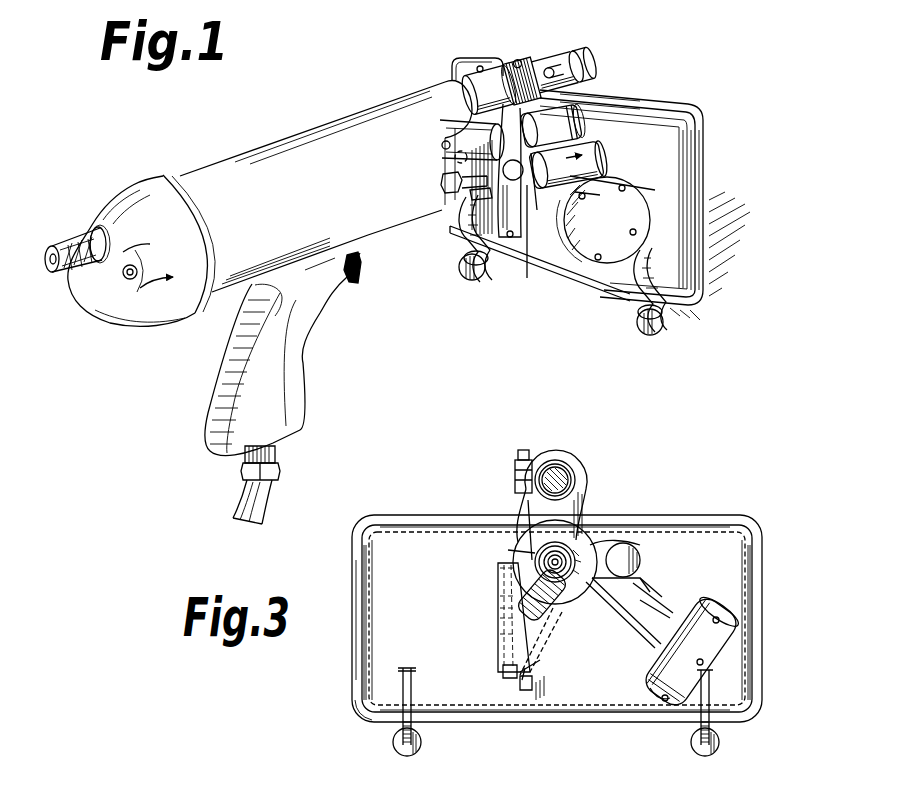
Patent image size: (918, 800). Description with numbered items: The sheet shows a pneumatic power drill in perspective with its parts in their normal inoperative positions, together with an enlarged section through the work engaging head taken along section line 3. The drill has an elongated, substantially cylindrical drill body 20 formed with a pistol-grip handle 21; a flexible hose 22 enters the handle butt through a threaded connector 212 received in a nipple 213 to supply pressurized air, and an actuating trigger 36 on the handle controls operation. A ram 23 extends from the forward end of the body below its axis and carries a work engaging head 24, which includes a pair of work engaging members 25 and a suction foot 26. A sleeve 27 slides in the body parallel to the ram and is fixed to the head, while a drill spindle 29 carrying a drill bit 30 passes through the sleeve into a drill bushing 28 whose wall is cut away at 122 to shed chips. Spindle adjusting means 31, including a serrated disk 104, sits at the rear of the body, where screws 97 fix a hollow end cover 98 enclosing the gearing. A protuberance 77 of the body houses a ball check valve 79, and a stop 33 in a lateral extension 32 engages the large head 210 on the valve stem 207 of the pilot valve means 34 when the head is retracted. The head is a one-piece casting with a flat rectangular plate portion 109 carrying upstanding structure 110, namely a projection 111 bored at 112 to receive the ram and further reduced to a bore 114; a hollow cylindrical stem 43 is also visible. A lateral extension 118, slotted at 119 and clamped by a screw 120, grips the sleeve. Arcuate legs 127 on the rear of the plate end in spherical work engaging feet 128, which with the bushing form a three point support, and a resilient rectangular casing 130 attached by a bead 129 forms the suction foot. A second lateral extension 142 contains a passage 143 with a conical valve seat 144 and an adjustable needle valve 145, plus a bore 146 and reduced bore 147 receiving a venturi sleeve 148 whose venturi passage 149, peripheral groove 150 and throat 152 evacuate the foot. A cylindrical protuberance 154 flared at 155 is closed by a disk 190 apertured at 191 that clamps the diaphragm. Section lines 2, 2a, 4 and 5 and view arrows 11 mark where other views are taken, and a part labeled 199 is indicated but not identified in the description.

In FIG. 1, the drill body 20 is at (262, 150).
In FIG. 1, the pistol-grip handle 21 is at (307, 397).
In FIG. 1, the flexible hose 22 is at (266, 506).
In FIG. 1, the ram 23 is at (476, 124).
In FIG. 3, the ram 23 is at (586, 580).
In FIG. 1, the work engaging head 24 is at (674, 108).
In FIG. 1, the work engaging members 25 is at (476, 283).
In FIG. 3, the work engaging members 25 is at (412, 758).
In FIG. 1, the suction foot 26 is at (708, 190).
In FIG. 3, the suction foot 26 is at (350, 648).
In FIG. 1, the sleeve 27 is at (481, 90).
In FIG. 3, the sleeve 27 is at (586, 478).
In FIG. 1, the drill bushing 28 is at (560, 58).
In FIG. 1, the drill spindle 29 is at (524, 62).
In FIG. 3, the drill spindle 29 is at (571, 470).
In FIG. 1, the drill bit 30 is at (578, 57).
In FIG. 1, the spindle adjusting means 31 is at (66, 236).
In FIG. 1, the lateral extension 32 is at (443, 178).
In FIG. 1, the stop 33 is at (470, 196).
In FIG. 1, the pilot valve means 34 is at (496, 170).
In FIG. 1, the actuating trigger 36 is at (361, 274).
In FIG. 3, the hollow cylindrical stem 43 is at (518, 517).
In FIG. 1, the protuberance 77 is at (442, 146).
In FIG. 1, the ball check valve 79 is at (455, 157).
In FIG. 1, the screws 97 is at (128, 279).
In FIG. 1, the hollow end cover 98 is at (142, 326).
In FIG. 1, the serrated disk 104 is at (106, 240).
In FIG. 1, the plate portion 109 is at (574, 278).
In FIG. 3, the plate portion 109 is at (412, 548).
In FIG. 1, the upstanding structure 110 is at (600, 162).
In FIG. 3, the upstanding structure 110 is at (610, 640).
In FIG. 1, the projection 111 is at (580, 136).
In FIG. 3, the projection 111 is at (582, 600).
In FIG. 3, the bore 112 is at (580, 562).
In FIG. 3, the reduced bore 114 is at (511, 550).
In FIG. 1, the lateral extension 118 is at (516, 64).
In FIG. 3, the lateral extension 118 is at (580, 494).
In FIG. 3, the slot 119 is at (515, 476).
In FIG. 1, the screw 120 is at (481, 66).
In FIG. 3, the screw 120 is at (512, 463).
In FIG. 1, the cut-away 122 is at (592, 90).
In FIG. 1, the arcuate legs 127 is at (462, 262).
In FIG. 3, the arcuate legs 127 is at (411, 697).
In FIG. 1, the spherical work engaging feet 128 is at (487, 266).
In FIG. 3, the bead 129 is at (742, 517).
In FIG. 3, the rectangular casing 130 is at (352, 708).
In FIG. 1, the second lateral extension 142 is at (528, 280).
In FIG. 3, the second lateral extension 142 is at (546, 660).
In FIG. 3, the passage 143 is at (552, 606).
In FIG. 3, the conical valve seat 144 is at (548, 643).
In FIG. 3, the needle valve 145 is at (532, 664).
In FIG. 3, the bore 146 is at (507, 612).
In FIG. 3, the reduced bore 147 is at (500, 652).
In FIG. 3, the venturi sleeve 148 is at (505, 623).
In FIG. 3, the venturi passage 149 is at (507, 573).
In FIG. 3, the peripheral groove 150 is at (507, 592).
In FIG. 3, the throat 152 is at (503, 608).
In FIG. 1, the cylindrical protuberance 154 is at (665, 193).
In FIG. 3, the cylindrical protuberance 154 is at (662, 604).
In FIG. 3, the flared outer end 155 is at (648, 690).
In FIG. 1, the disk 190 is at (607, 220).
In FIG. 3, the disk 190 is at (691, 651).
In FIG. 1, the aperture 191 is at (629, 234).
In FIG. 3, the aperture 191 is at (700, 670).
In FIG. 1, the arrow end 199 is at (604, 153).
In FIG. 3, the arrow end 199 is at (642, 566).
In FIG. 1, the valve stem 207 is at (539, 192).
In FIG. 1, the large head 210 is at (566, 118).
In FIG. 3, the large head 210 is at (640, 545).
In FIG. 1, the threaded connector 212 is at (282, 470).
In FIG. 1, the nipple 213 is at (280, 452).
In FIG. 1, the section line 2 is at (48, 253).
In FIG. 1, the section line 2a is at (440, 190).
In FIG. 1, the section line 3— 3 is at (320, 100).
In FIG. 3, the section line 4 is at (507, 453).
In FIG. 3, the section line 5 is at (526, 540).
In FIG. 3, the view arrow 11 is at (483, 540).